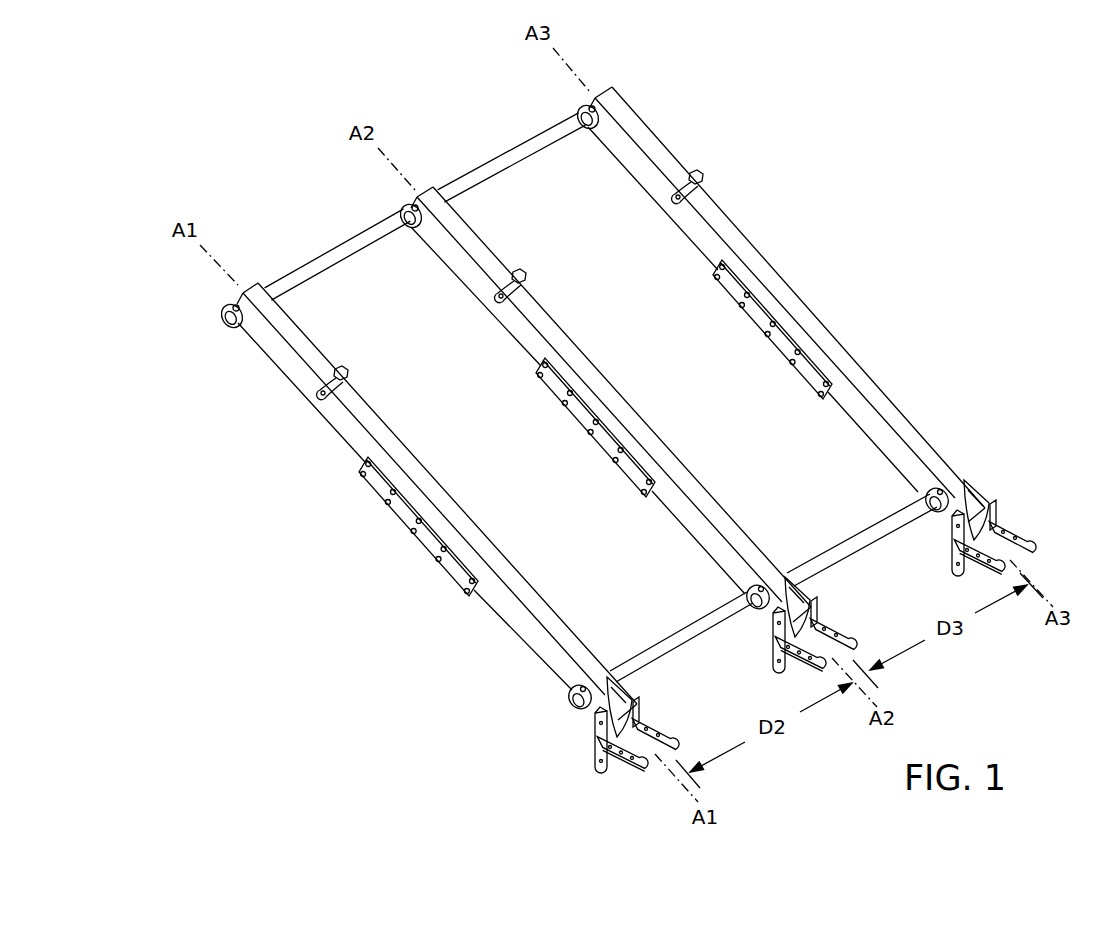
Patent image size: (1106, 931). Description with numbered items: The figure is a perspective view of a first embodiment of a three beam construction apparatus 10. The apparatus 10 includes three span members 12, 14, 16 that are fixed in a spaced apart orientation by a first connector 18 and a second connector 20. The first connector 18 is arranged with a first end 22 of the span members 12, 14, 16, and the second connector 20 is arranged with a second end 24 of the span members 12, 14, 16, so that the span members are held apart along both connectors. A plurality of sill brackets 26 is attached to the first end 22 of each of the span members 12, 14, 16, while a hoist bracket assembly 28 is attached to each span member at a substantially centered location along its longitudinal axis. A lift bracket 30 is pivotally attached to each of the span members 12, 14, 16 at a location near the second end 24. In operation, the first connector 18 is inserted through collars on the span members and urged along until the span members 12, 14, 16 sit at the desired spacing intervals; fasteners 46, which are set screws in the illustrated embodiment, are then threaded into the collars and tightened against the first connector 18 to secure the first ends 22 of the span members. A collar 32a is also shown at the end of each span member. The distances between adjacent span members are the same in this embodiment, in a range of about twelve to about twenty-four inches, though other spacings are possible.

The apparatus 10 is at (797, 104).
The span member 12 is at (328, 422).
The span member 14 is at (500, 328).
The span member 16 is at (677, 228).
The first connector 18 is at (678, 632).
The second connector 20 is at (342, 247).
The first end 22 is at (876, 446).
The second end 24 is at (606, 148).
The sill bracket 26 is at (1024, 526).
The hoist bracket assembly 28 is at (810, 390).
The lift bracket 30 is at (700, 174).
The tube end collar 32a is at (937, 520).
The fastener 46 is at (976, 480).